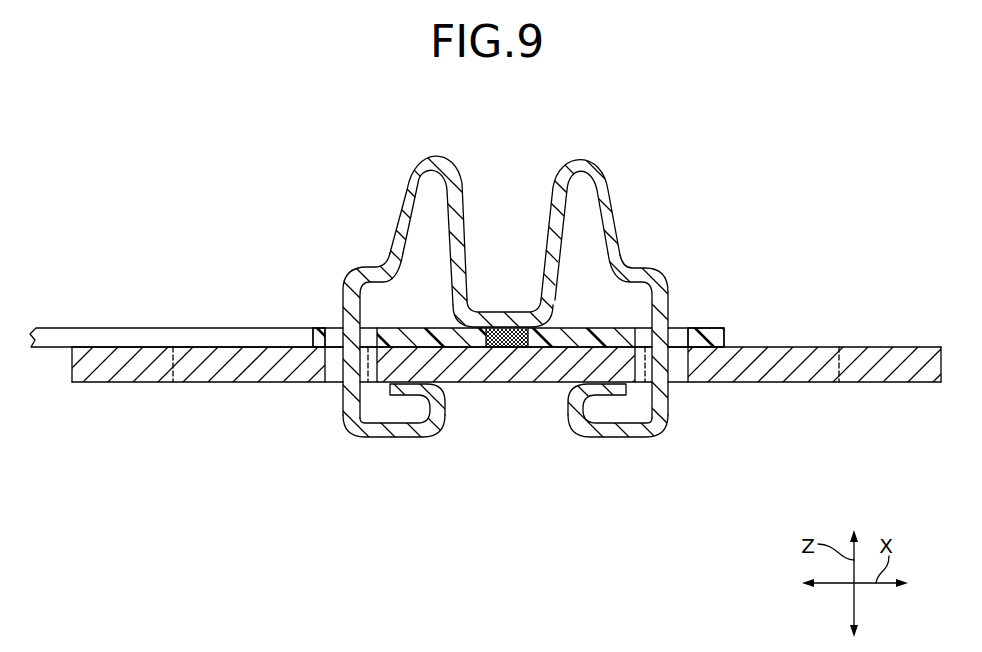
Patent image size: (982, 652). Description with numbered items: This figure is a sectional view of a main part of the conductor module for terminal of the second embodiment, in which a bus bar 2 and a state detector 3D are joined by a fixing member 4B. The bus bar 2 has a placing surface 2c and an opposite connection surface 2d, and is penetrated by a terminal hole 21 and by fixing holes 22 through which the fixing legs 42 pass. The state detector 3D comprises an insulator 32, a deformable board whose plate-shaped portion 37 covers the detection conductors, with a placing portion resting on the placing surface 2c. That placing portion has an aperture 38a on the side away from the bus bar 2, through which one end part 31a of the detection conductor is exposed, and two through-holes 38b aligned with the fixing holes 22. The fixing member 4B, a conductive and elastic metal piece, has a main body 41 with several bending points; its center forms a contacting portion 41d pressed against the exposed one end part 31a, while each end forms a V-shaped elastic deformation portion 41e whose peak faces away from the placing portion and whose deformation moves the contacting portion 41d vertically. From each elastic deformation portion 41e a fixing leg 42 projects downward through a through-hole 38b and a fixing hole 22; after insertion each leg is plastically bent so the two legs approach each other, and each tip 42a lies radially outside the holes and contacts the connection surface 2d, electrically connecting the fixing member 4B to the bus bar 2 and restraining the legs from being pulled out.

The bus bar 2 is at (888, 337).
The placing surface 2c is at (798, 347).
The connection surface 2d is at (191, 383).
The state detector 3D is at (98, 317).
The fixing member 4B is at (430, 146).
The terminal hole 21 is at (228, 367).
The fixing hole 22 is at (334, 362).
The one end part 31a is at (508, 348).
The insulator 32 is at (164, 328).
The plate-shaped portion 37 is at (57, 341).
The aperture 38a is at (508, 328).
The through-hole 38b is at (333, 327).
The main body 41 is at (579, 158).
The contacting portion 41d is at (492, 310).
The elastic deformation portion 41e is at (400, 191).
The fixing leg 42 is at (339, 403).
The tip 42a is at (396, 436).